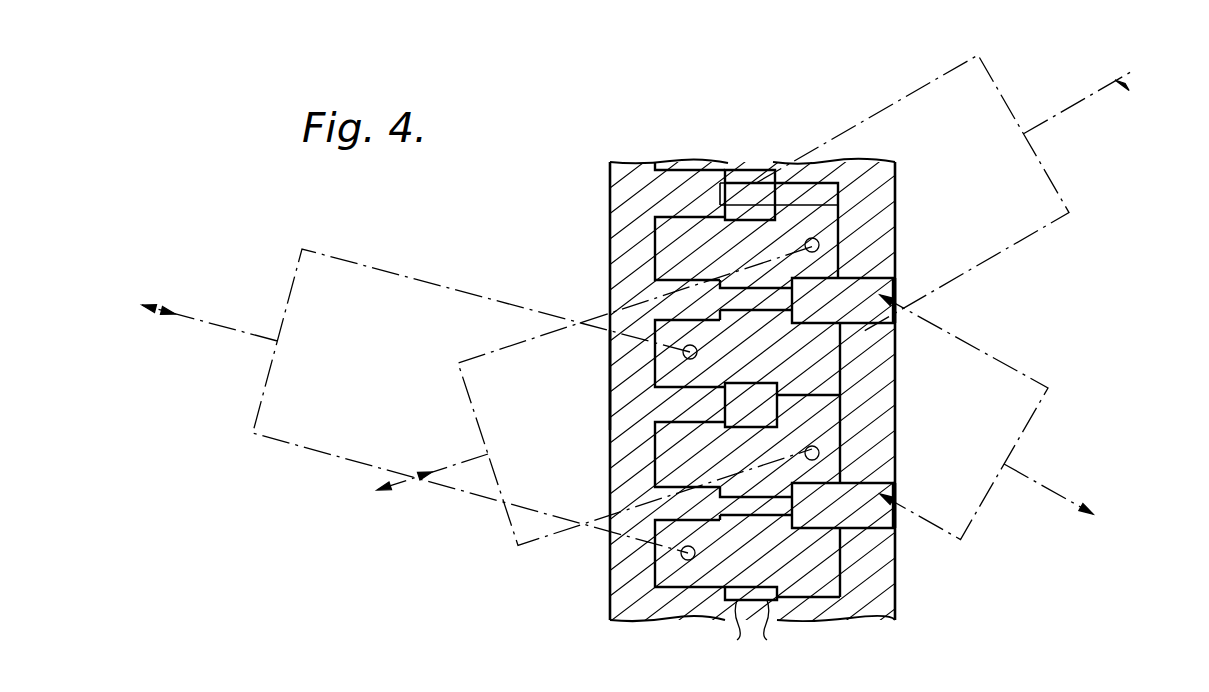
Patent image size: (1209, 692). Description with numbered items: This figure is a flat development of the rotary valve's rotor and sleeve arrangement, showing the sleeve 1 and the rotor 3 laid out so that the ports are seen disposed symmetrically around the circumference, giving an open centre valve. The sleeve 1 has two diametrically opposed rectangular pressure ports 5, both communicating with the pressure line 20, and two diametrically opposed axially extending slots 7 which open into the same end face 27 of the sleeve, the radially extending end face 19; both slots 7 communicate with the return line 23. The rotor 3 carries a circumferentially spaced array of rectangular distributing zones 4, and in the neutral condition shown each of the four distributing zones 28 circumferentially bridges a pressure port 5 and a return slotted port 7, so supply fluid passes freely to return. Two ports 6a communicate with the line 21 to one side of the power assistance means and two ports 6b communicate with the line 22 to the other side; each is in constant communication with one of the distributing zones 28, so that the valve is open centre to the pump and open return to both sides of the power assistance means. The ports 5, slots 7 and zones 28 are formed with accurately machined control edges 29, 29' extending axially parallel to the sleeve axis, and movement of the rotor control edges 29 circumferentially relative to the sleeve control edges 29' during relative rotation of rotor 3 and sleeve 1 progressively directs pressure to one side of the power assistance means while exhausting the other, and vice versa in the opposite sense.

The sleeve 1 is at (628, 250).
The rotor 3 is at (748, 634).
The distributing zones 4 is at (790, 290).
The first port means 5 is at (738, 169).
The second port means 6a is at (865, 240).
The second port means 6b is at (702, 317).
The axially extending slots 7 is at (893, 327).
The end face 19 is at (612, 383).
The fluid pressure supply port 20 is at (1037, 120).
The port 21 is at (447, 470).
The port 22 is at (200, 320).
The port 23 is at (1045, 490).
The end face 27 is at (897, 398).
The distributing zones 28 is at (718, 222).
The control edges 29 is at (779, 209).
The control edges 29' is at (809, 217).